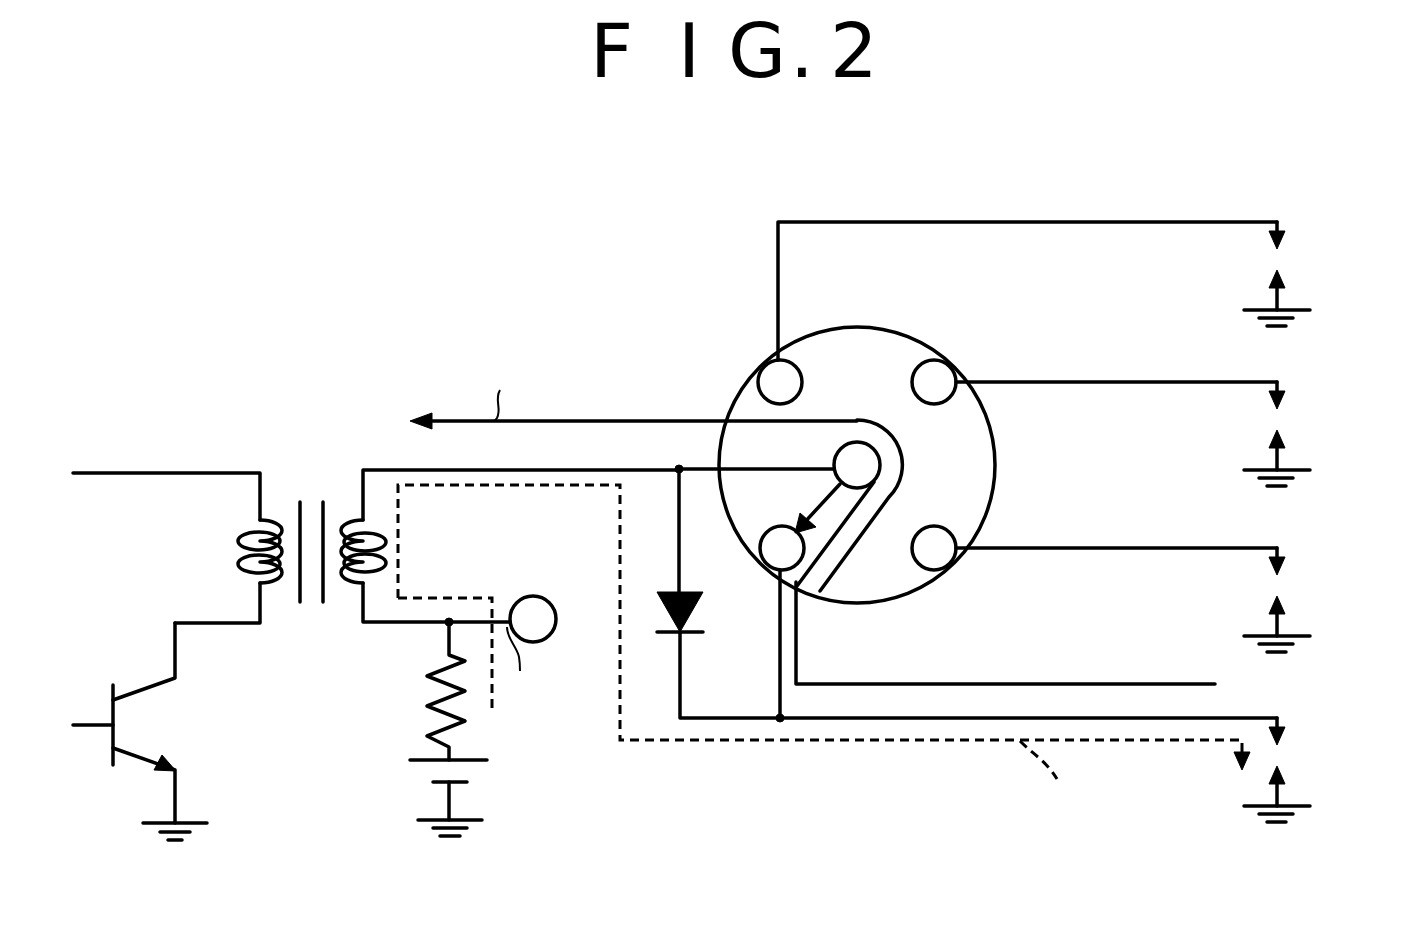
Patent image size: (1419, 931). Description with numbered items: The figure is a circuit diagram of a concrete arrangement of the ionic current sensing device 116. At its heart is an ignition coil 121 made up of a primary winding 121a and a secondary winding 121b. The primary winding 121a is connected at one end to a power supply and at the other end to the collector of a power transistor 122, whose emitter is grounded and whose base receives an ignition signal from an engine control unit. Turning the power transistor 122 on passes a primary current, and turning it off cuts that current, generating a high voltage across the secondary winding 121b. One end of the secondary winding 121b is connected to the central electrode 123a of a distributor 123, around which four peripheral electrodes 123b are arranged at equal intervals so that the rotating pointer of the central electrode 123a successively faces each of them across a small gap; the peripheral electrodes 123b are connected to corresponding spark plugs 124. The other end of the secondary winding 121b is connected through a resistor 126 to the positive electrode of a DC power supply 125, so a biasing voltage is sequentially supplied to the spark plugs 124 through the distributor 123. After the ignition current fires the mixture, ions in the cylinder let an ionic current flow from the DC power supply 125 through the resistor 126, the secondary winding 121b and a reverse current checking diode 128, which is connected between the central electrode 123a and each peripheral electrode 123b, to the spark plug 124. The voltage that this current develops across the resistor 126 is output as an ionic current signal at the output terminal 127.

The ionic current sensing device 116 is at (786, 840).
The ignition coil 121 is at (312, 503).
The primary winding 121a is at (237, 547).
The secondary winding 121b is at (385, 548).
The power transistor 122 is at (148, 688).
The distributor 123 is at (929, 272).
The central electrode 123a is at (853, 442).
The peripheral electrodes 123b is at (763, 380).
The spark plugs 124 is at (1280, 258).
The DC power supply 125 is at (473, 771).
The resistor 126 is at (424, 715).
The output terminal 127 is at (545, 638).
The reverse current checking diode 128 is at (658, 600).